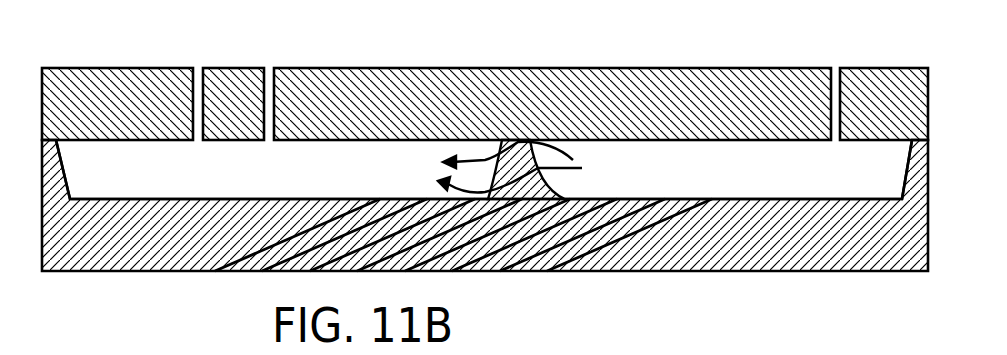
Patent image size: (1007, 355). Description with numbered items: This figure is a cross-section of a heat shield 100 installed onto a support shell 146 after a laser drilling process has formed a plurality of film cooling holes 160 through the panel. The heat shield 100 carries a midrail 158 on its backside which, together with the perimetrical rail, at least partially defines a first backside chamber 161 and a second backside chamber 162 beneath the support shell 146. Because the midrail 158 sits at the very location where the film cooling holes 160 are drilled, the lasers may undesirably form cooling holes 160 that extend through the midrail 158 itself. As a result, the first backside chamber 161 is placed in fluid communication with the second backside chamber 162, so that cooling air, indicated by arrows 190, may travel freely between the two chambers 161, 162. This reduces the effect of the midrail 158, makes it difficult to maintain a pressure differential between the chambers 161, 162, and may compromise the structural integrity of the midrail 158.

The heat shield 100 is at (808, 250).
The support shell 146 is at (728, 75).
The midrail 158 is at (507, 140).
The film cooling holes 160 is at (545, 232).
The first backside chamber 161 is at (750, 182).
The second backside chamber 162 is at (308, 182).
The arrows 190 is at (535, 142).